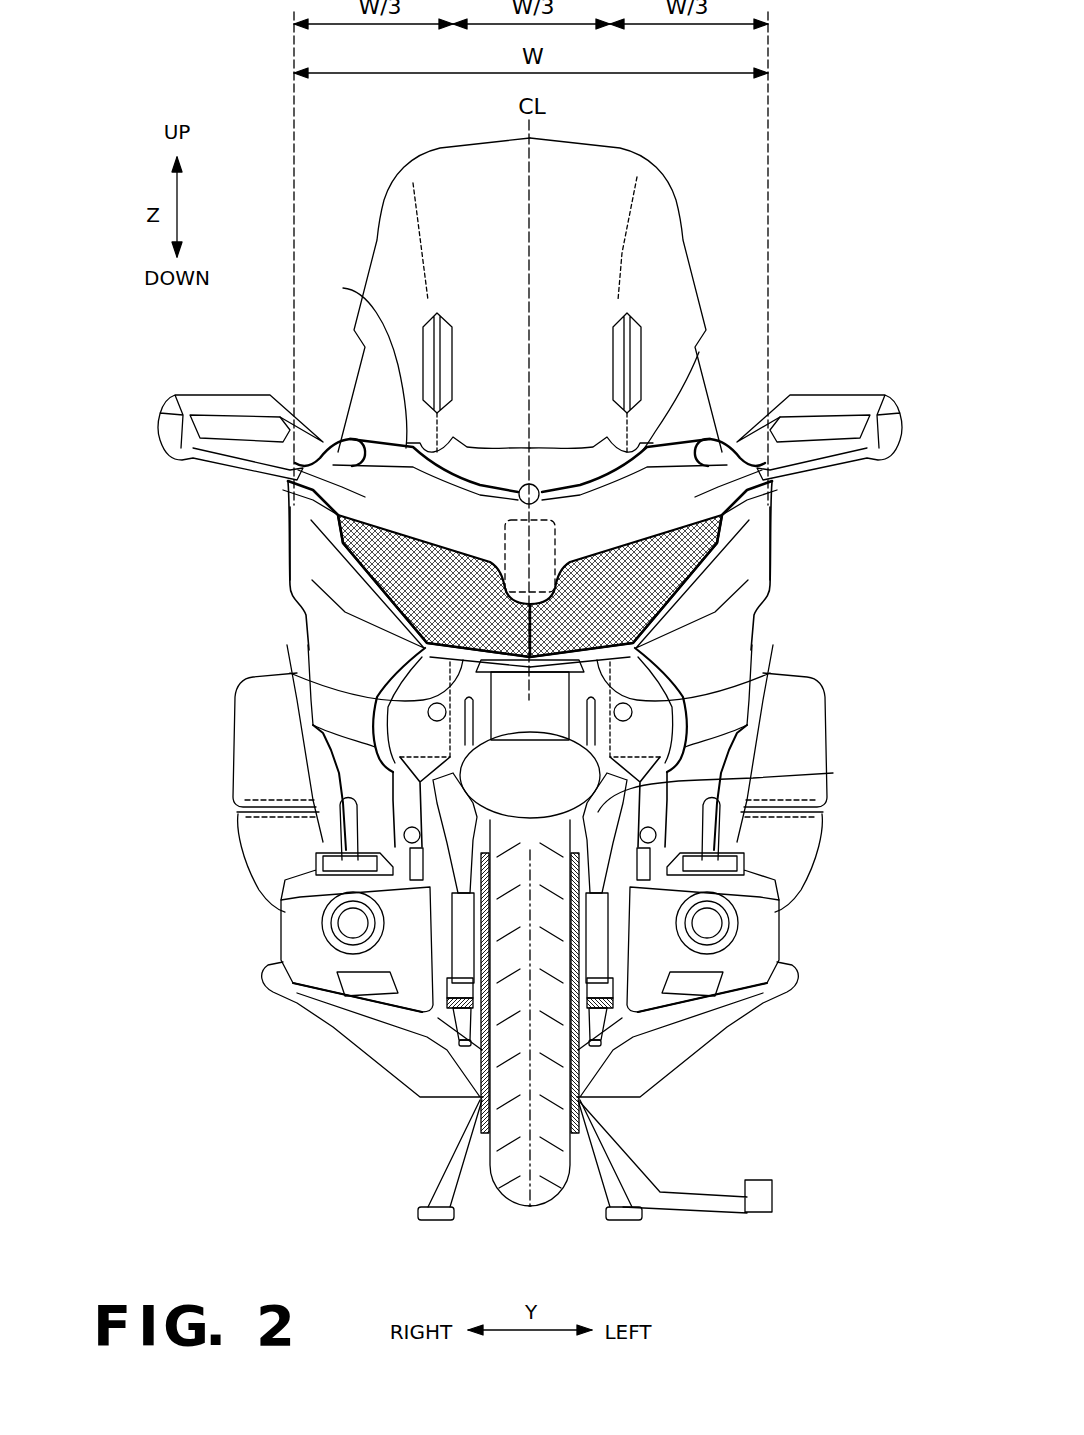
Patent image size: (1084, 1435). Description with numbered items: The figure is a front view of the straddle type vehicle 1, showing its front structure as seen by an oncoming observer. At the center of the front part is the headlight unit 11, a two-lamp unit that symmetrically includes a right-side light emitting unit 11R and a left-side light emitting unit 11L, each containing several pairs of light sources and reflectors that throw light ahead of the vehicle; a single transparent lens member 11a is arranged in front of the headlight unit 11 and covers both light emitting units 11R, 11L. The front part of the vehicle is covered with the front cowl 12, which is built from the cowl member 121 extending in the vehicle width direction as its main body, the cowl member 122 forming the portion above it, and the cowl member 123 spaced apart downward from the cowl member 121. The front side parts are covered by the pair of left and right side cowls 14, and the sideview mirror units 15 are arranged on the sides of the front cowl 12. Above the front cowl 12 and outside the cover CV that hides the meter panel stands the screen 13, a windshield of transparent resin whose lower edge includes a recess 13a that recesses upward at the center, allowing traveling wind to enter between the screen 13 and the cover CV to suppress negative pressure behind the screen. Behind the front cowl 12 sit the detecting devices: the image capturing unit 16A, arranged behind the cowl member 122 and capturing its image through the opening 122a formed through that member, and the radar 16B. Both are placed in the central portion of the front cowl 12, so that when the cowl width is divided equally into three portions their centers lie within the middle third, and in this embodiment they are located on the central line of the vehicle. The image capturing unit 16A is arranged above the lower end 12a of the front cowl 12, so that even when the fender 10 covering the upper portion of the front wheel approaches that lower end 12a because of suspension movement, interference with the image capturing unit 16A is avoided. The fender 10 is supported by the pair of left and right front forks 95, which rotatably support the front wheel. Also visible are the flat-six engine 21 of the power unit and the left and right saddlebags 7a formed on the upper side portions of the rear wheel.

The straddle type vehicle 1 is at (808, 266).
The saddlebags 7a is at (234, 763).
The fender 10 is at (833, 773).
The headlight unit 11 is at (747, 511).
The right-side light emitting unit 11R is at (390, 558).
The left-side light emitting unit 11L is at (668, 558).
The lens member 11a is at (715, 605).
The front cowl 12 is at (300, 502).
The lower end of the front cowl 12a is at (297, 673).
The screen 13 is at (683, 238).
The recess 13a is at (343, 288).
The side cowls 14 is at (287, 573).
The sideview mirror units 15 is at (215, 393).
The image capturing unit 16A is at (518, 482).
The radar 16B is at (508, 484).
The engine 21 is at (281, 920).
The front forks 95 is at (470, 1012).
The cowl member 121 is at (710, 465).
The cowl member 122 is at (596, 478).
The opening 122a is at (533, 482).
The cowl member 123 is at (325, 622).
The cover CV is at (615, 460).